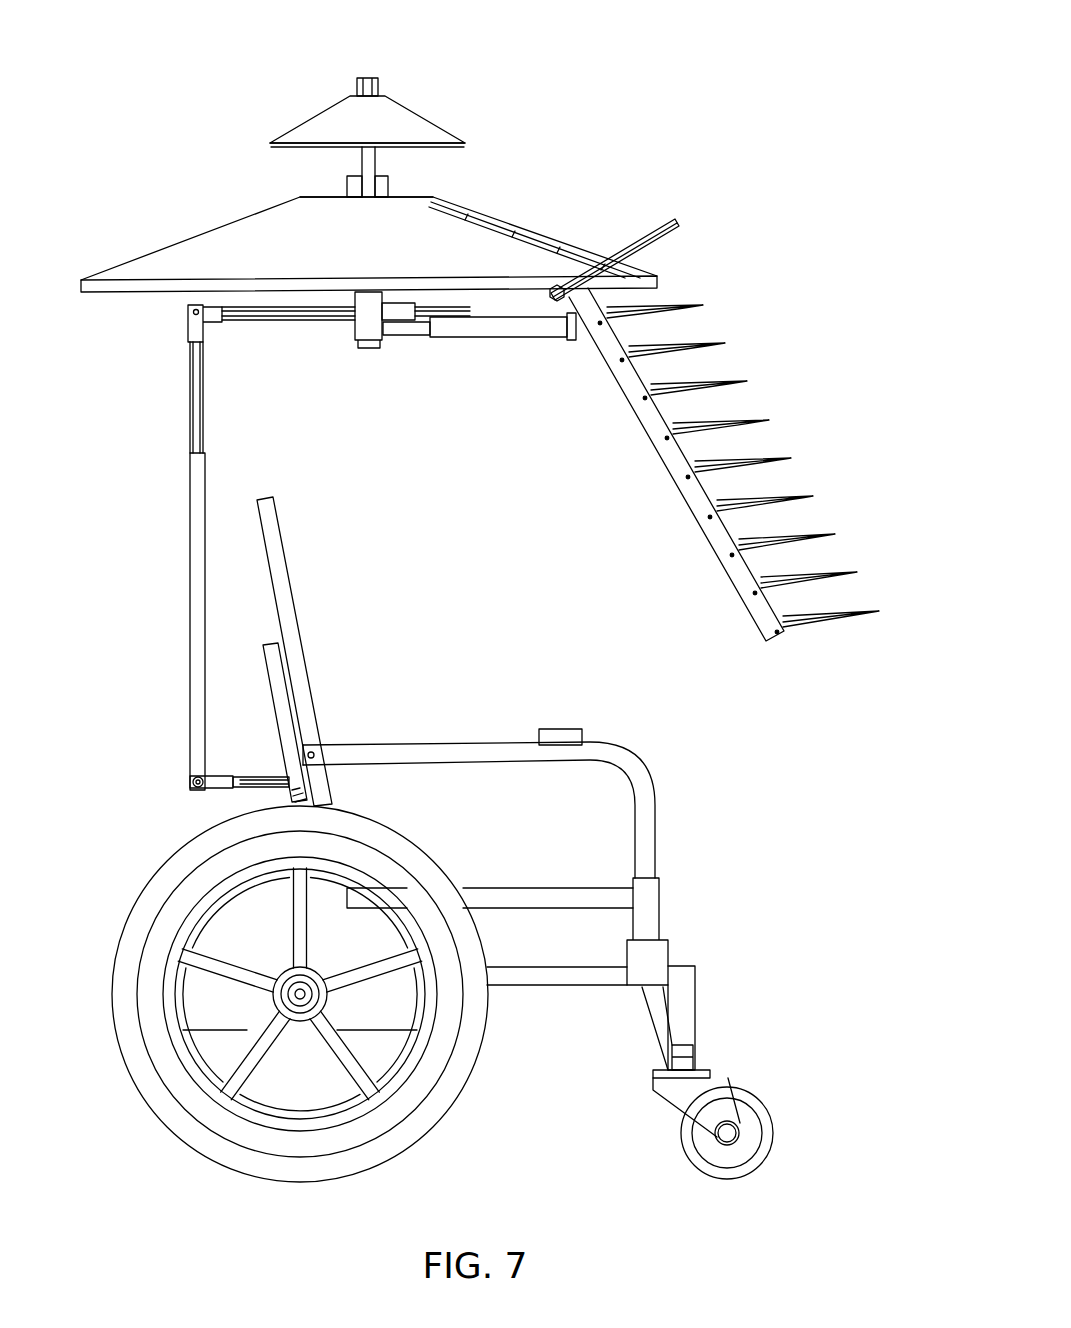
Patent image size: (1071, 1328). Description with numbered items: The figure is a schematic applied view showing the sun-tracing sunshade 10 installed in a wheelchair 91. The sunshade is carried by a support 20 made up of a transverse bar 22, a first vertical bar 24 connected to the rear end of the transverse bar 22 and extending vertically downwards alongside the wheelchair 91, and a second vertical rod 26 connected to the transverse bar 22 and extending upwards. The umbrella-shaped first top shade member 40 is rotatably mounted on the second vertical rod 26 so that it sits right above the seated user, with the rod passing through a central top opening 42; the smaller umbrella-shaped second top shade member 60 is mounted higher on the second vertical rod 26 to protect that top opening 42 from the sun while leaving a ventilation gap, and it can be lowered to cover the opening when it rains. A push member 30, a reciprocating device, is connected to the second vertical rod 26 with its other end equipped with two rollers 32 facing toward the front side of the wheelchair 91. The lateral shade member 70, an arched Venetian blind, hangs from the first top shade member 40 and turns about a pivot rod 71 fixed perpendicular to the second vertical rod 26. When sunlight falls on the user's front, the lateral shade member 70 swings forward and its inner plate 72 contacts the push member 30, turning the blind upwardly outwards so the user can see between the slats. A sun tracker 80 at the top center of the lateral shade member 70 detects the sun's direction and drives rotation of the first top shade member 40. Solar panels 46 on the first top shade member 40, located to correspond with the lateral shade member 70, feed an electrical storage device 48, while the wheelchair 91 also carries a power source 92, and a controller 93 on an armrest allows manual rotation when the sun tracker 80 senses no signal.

The sun-tracing sunshade 10 is at (608, 100).
The support 20 is at (190, 626).
The transverse bar 22 is at (303, 322).
The first vertical bar 24 is at (192, 507).
The second vertical rod 26 is at (380, 350).
The push member 30 is at (497, 340).
The rollers 32 is at (572, 346).
The first top shade member 40 is at (194, 233).
The top opening 42 is at (318, 195).
The solar panels 46 is at (563, 252).
The electrical storage device 48 is at (389, 186).
The second top shade member 60 is at (324, 116).
The lateral shade member 70 is at (707, 541).
The pivot rod 71 is at (556, 284).
The inner plate 72 is at (590, 340).
The sun tracker 80 is at (656, 226).
The wheelchair 91 is at (136, 870).
The power source 92 is at (213, 1033).
The controller 93 is at (545, 728).